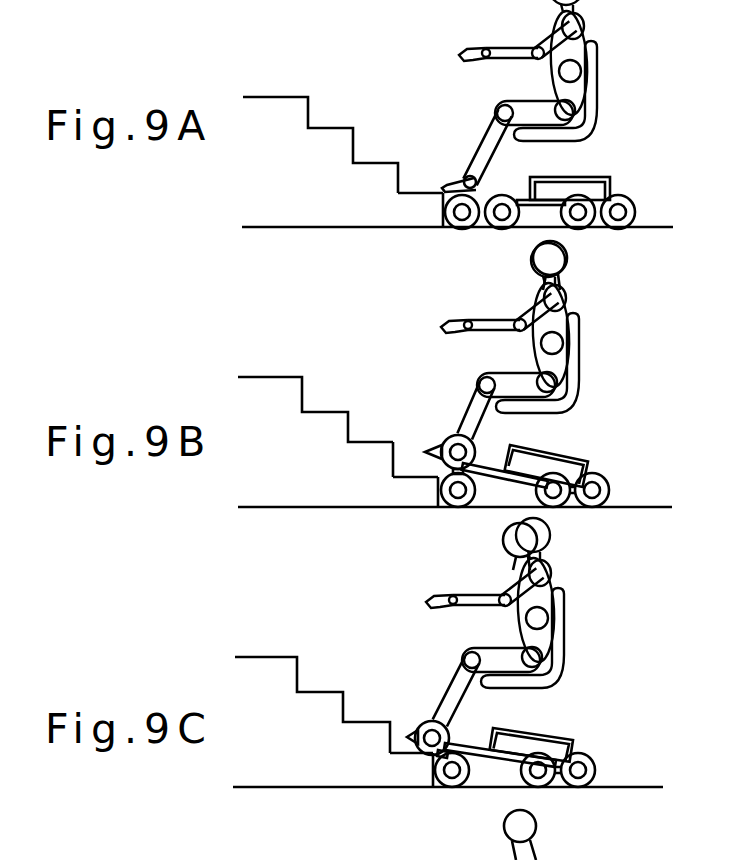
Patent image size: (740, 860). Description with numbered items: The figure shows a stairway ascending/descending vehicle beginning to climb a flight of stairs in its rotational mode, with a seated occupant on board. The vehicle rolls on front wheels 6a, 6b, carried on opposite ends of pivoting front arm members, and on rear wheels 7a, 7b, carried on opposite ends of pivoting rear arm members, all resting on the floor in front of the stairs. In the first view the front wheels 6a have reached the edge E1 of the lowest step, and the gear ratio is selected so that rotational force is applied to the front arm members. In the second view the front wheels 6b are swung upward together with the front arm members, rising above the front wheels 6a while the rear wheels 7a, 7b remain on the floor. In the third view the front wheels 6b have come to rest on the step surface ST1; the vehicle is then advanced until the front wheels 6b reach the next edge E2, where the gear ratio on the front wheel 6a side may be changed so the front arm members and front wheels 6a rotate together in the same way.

In FIG. 9A, the step surface ST1 is at (410, 193).
In FIG. 9B, the step surface ST1 is at (413, 478).
In FIG. 9C, the step surface ST1 is at (410, 755).
In FIG. 9A, the edge E1 is at (443, 212).
In FIG. 9B, the edge E1 is at (438, 490).
In FIG. 9C, the edge E1 is at (433, 772).
In FIG. 9B, the edge E2 is at (393, 462).
In FIG. 9A, the front wheels 6a is at (457, 228).
In FIG. 9B, the front wheels 6a is at (460, 508).
In FIG. 9C, the front wheels 6a is at (448, 788).
In FIG. 9A, the front wheels 6b is at (500, 228).
In FIG. 9B, the front wheels 6b is at (447, 440).
In FIG. 9C, the front wheels 6b is at (423, 723).
In FIG. 9A, the rear wheels 7a is at (582, 228).
In FIG. 9B, the rear wheels 7a is at (555, 508).
In FIG. 9C, the rear wheels 7a is at (547, 788).
In FIG. 9A, the rear wheels 7b is at (625, 228).
In FIG. 9B, the rear wheels 7b is at (608, 488).
In FIG. 9C, the rear wheels 7b is at (592, 767).